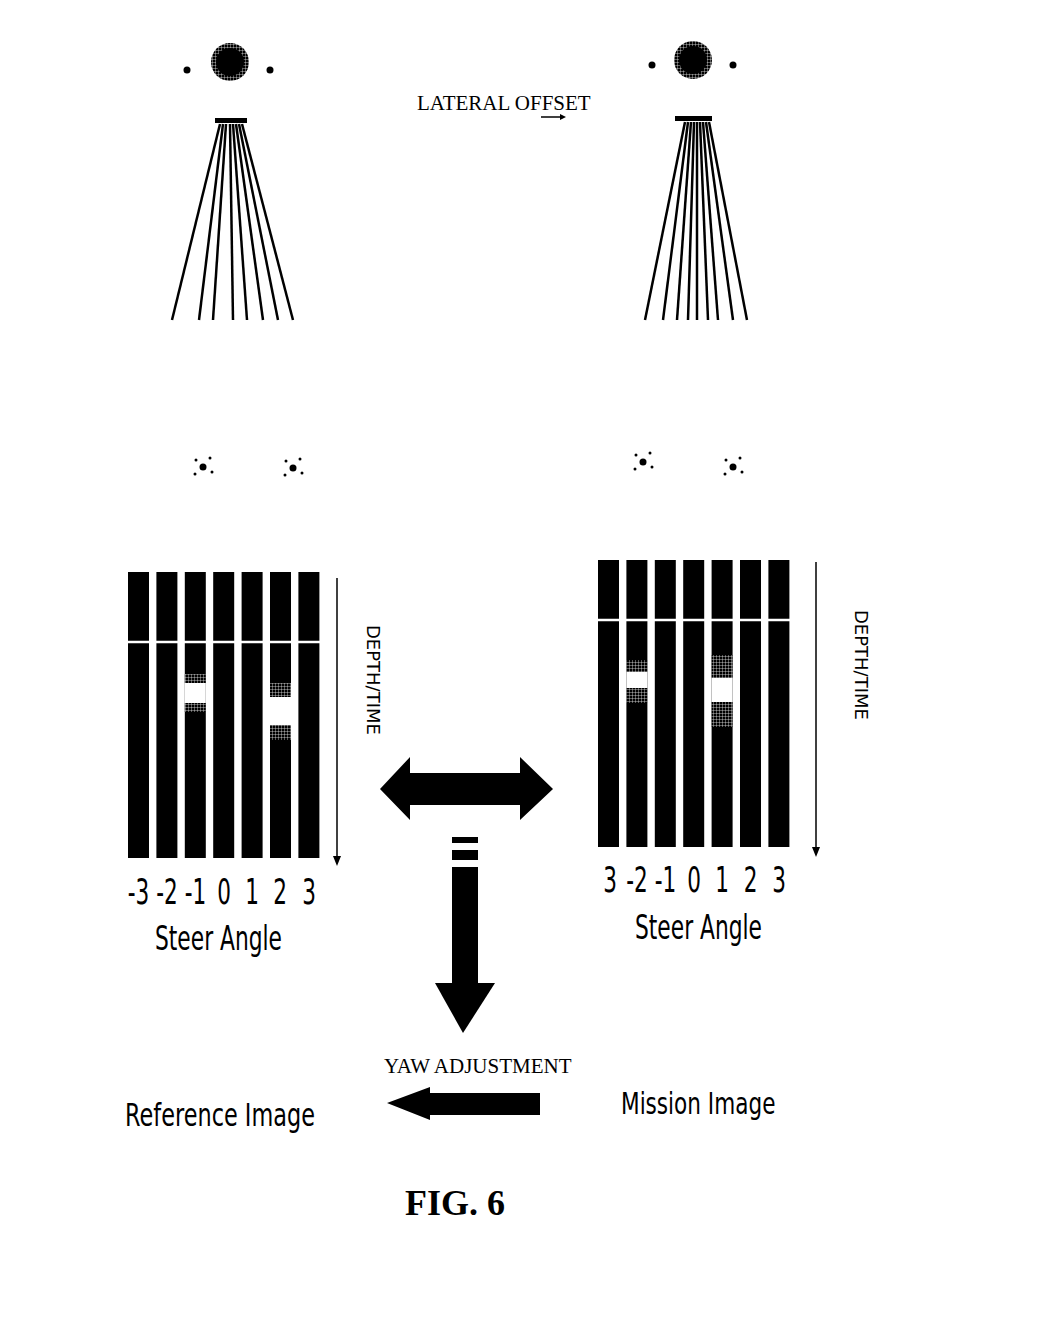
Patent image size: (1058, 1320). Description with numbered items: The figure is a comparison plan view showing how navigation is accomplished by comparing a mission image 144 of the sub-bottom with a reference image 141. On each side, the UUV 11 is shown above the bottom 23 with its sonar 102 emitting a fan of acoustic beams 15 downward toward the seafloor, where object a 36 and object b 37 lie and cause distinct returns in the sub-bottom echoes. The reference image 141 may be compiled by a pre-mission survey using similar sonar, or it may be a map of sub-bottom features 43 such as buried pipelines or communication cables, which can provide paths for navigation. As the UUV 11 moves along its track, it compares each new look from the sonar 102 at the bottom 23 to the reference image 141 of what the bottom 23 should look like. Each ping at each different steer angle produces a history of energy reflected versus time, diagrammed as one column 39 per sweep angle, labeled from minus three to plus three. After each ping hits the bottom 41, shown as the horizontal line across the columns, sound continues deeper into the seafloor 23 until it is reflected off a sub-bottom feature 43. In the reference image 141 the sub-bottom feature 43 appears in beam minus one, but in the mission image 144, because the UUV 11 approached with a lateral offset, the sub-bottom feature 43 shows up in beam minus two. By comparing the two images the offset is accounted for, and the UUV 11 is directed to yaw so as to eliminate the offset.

The reference image 141 is at (156, 26).
The mission image 144 is at (624, 19).
The UUV 11 is at (257, 107).
The sonar 102 is at (217, 122).
The acoustic beams 15 is at (255, 208).
The bottom 23 is at (480, 498).
The object a 36 is at (192, 468).
The object b 37 is at (308, 470).
The column 39 is at (128, 583).
The bottom 41 is at (128, 642).
The sub-bottom feature 43 is at (193, 688).